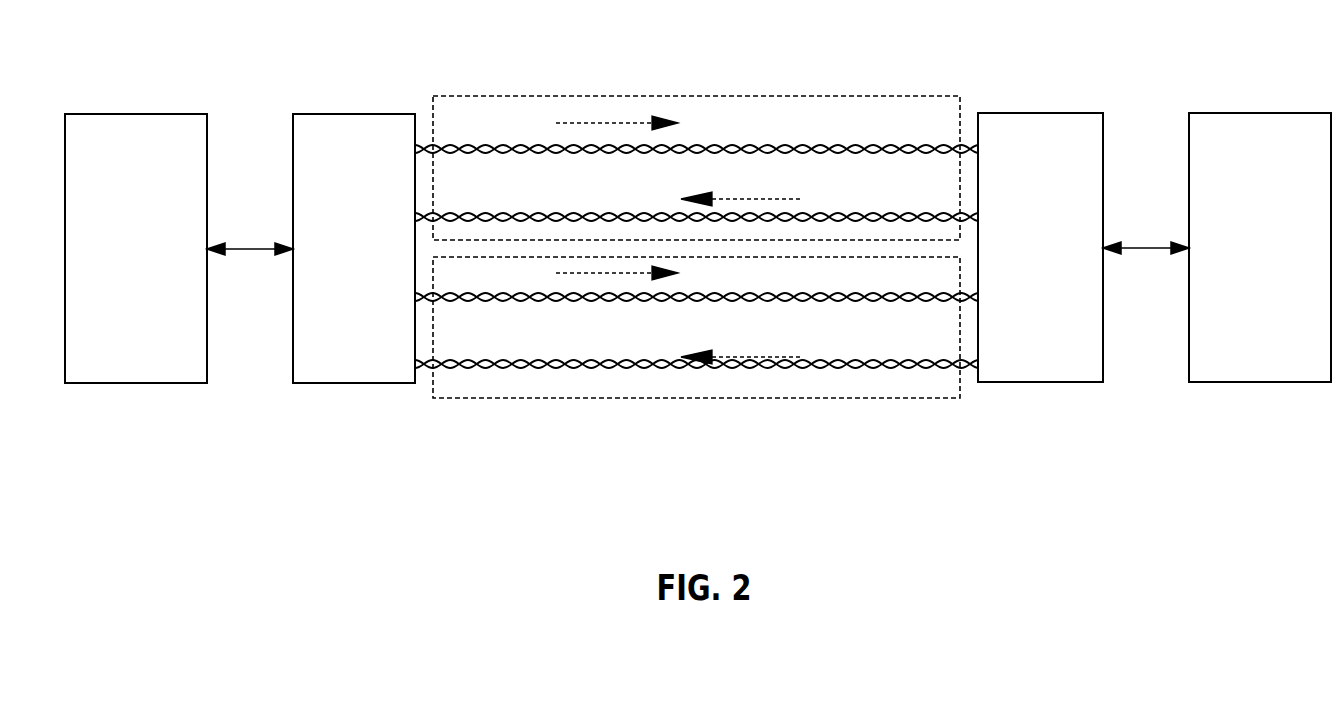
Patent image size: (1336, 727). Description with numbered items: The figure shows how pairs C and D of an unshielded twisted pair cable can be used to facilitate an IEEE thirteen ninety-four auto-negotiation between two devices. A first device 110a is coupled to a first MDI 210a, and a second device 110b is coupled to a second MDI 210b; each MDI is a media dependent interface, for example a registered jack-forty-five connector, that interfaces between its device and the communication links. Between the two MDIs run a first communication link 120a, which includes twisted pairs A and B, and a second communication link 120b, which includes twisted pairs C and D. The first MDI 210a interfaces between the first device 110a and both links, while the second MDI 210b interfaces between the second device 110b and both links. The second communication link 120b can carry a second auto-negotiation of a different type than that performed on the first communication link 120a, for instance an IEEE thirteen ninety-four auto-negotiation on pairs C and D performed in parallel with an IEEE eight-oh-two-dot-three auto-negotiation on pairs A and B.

The first device 110a is at (137, 114).
The first MDI 210a is at (352, 114).
The first communication link 120a is at (783, 96).
The second communication link 120b is at (782, 398).
The second MDI 210b is at (1042, 113).
The second device 110b is at (1262, 113).